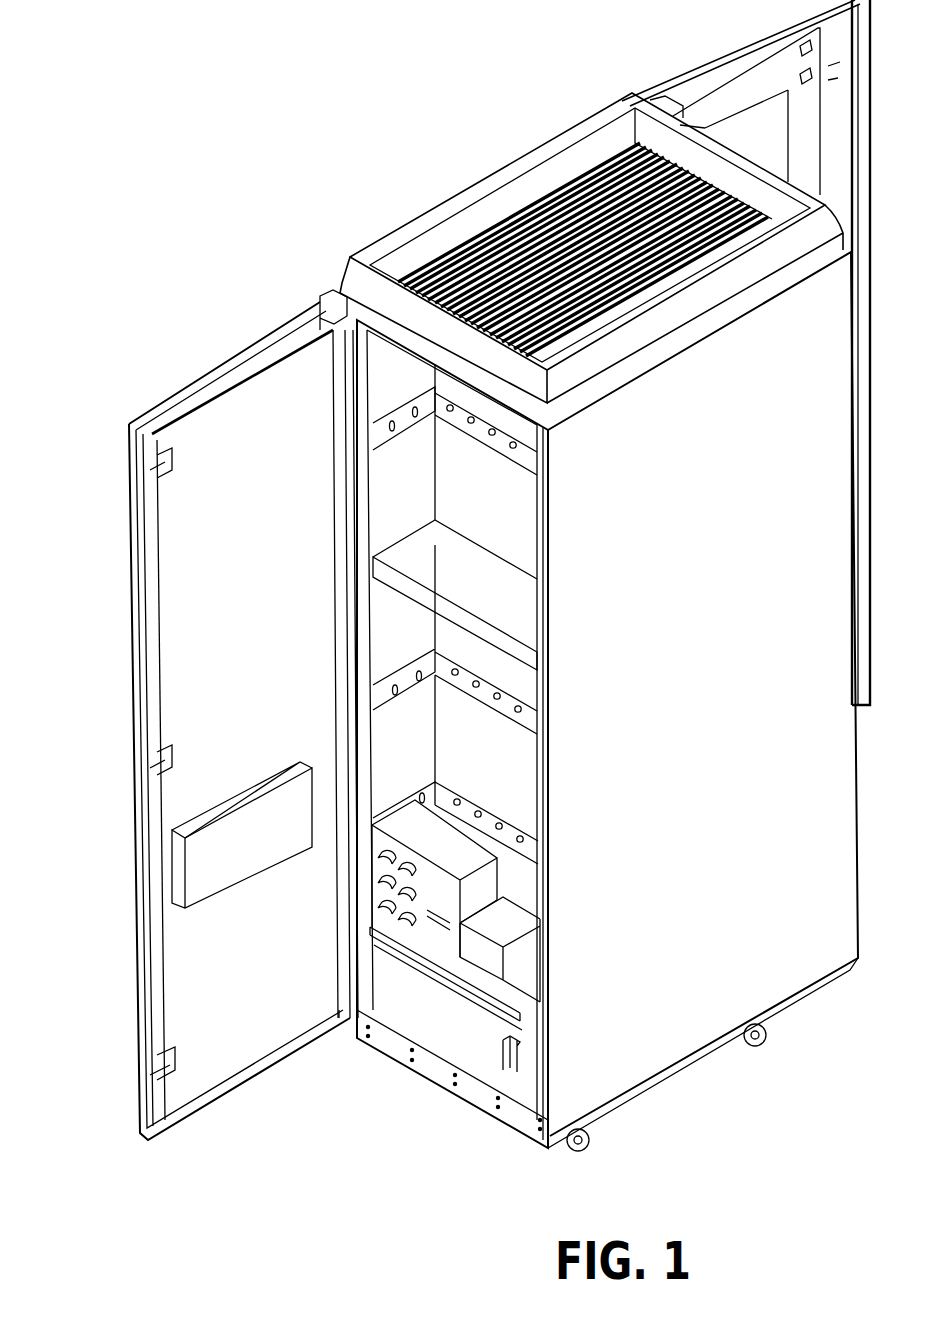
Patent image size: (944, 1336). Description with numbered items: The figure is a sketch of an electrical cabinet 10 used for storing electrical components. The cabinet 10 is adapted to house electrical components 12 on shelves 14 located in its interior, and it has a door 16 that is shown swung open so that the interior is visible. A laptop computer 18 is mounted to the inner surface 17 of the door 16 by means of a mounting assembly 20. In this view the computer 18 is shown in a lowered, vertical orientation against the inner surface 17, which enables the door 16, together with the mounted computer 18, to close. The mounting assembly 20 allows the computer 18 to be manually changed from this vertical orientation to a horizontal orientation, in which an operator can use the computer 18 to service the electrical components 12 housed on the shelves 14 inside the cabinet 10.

The electrical cabinet 10 is at (418, 222).
The electrical components 12 is at (440, 905).
The shelves 14 is at (497, 580).
The door 16 is at (204, 715).
The inner surface 17 is at (256, 606).
The laptop computer 18 is at (181, 806).
The mounting assembly 20 is at (259, 787).